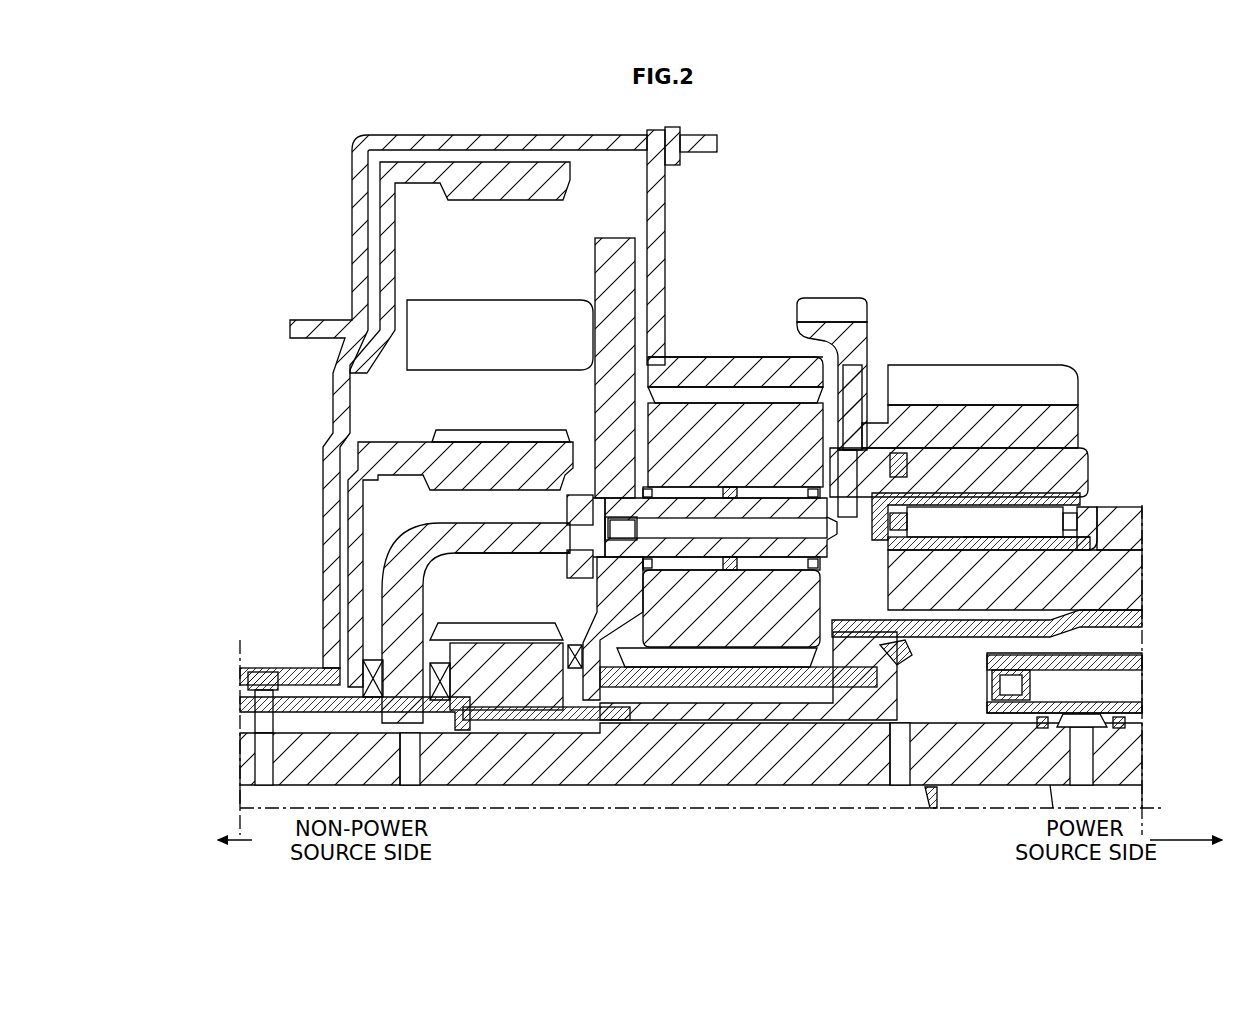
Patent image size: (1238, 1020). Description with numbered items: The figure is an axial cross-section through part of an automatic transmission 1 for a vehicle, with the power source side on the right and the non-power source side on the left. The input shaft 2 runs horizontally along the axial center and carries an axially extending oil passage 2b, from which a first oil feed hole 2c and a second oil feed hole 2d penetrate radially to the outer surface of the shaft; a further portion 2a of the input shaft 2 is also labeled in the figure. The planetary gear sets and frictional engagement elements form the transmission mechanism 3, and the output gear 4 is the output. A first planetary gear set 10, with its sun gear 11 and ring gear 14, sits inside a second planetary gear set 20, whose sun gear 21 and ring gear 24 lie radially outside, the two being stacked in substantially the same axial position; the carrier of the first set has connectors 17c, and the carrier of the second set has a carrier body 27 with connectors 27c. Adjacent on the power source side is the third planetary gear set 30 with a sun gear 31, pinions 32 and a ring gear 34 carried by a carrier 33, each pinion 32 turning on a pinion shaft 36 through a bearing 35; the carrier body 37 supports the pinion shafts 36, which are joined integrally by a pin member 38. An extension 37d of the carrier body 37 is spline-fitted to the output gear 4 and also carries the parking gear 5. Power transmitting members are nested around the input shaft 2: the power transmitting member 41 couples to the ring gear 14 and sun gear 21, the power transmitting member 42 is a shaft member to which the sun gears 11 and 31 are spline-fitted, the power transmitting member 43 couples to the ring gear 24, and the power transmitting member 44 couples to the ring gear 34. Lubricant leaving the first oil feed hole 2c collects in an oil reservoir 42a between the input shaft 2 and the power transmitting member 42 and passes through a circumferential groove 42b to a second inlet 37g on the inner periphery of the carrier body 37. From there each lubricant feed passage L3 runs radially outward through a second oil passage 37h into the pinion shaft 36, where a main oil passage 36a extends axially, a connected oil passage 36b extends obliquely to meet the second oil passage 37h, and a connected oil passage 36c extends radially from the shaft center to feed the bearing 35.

The automatic transmission 1 is at (1022, 242).
The input shaft 2 is at (1132, 752).
The case bottom portion 2a is at (1110, 808).
The oil passage 2b is at (240, 797).
The first oil feed hole 2c is at (895, 748).
The second oil feed hole 2d is at (413, 770).
The transmission mechanism 3 is at (740, 240).
The output gear 4 is at (1070, 372).
The parking gear 5 is at (830, 298).
The first planetary gear set 10 is at (378, 590).
The sun gear 11 is at (545, 685).
The ring gear 14 is at (427, 450).
The connectors 17c is at (465, 553).
The second planetary gear set 20 is at (606, 238).
The sun gear 21 is at (492, 448).
The ring gear 24 is at (528, 166).
The carrier body 27 is at (660, 262).
The connectors 27c is at (478, 300).
The third planetary gear set 30 is at (688, 357).
The sun gear 31 is at (663, 683).
The pinions 32 is at (707, 627).
The carrier 33 is at (595, 612).
The ring gear 34 is at (770, 357).
The bearing 35 is at (855, 450).
The pinion shaft 36 is at (567, 511).
The main oil passage 36a is at (600, 495).
The connected oil passage 36b is at (907, 521).
The connected oil passage 36c is at (737, 487).
The carrier body 37 is at (905, 556).
The extension 37d is at (1085, 482).
The second inlet 37g is at (912, 600).
The second oil passage 37h is at (1078, 523).
The pin member 38 is at (900, 453).
The power transmitting member 41 is at (252, 712).
The power transmitting member 42 is at (1120, 620).
The oil reservoir 42a is at (942, 701).
The circumferential groove 42b is at (893, 653).
The power transmitting member 43 is at (245, 676).
The power transmitting member 44 is at (466, 135).
The lubricant feed passage L3 is at (965, 537).